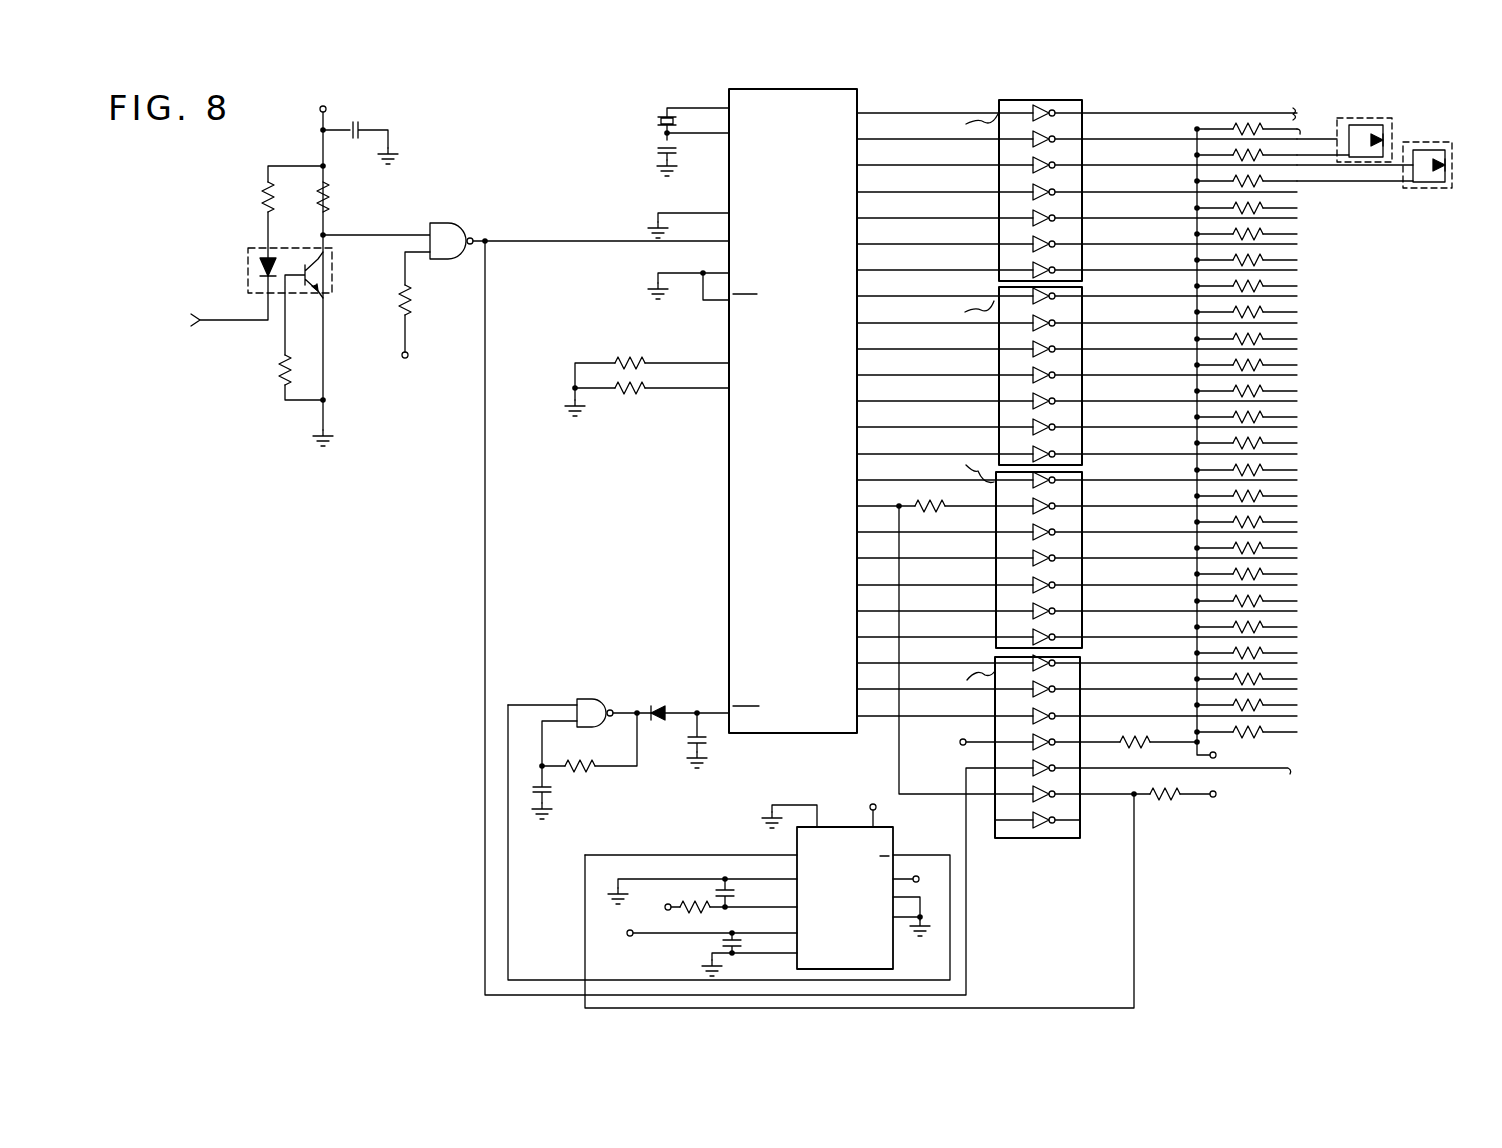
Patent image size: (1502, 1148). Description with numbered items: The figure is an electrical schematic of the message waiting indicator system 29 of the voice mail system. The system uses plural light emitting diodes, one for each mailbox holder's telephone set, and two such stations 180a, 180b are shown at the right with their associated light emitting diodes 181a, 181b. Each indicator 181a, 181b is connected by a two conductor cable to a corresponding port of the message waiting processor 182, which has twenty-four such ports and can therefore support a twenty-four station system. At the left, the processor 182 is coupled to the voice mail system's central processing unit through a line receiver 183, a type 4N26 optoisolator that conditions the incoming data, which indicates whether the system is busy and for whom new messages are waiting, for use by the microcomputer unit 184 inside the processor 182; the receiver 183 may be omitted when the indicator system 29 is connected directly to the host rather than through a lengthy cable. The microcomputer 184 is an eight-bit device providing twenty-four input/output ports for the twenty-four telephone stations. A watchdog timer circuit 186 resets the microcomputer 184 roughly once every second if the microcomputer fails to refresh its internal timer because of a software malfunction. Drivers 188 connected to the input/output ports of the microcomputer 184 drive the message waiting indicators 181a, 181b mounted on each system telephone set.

The message waiting indicator system 29 is at (1360, 826).
The station 180a is at (1398, 117).
The station 180b is at (1429, 192).
The light emitting diode 181a is at (1388, 141).
The light emitting diode 181b is at (1452, 166).
The message waiting processor 182 is at (427, 706).
The line receiver 183 is at (252, 399).
The microcomputer unit 184 is at (708, 467).
The watchdog timer circuit 186 is at (551, 618).
The drivers 188 is at (1118, 101).